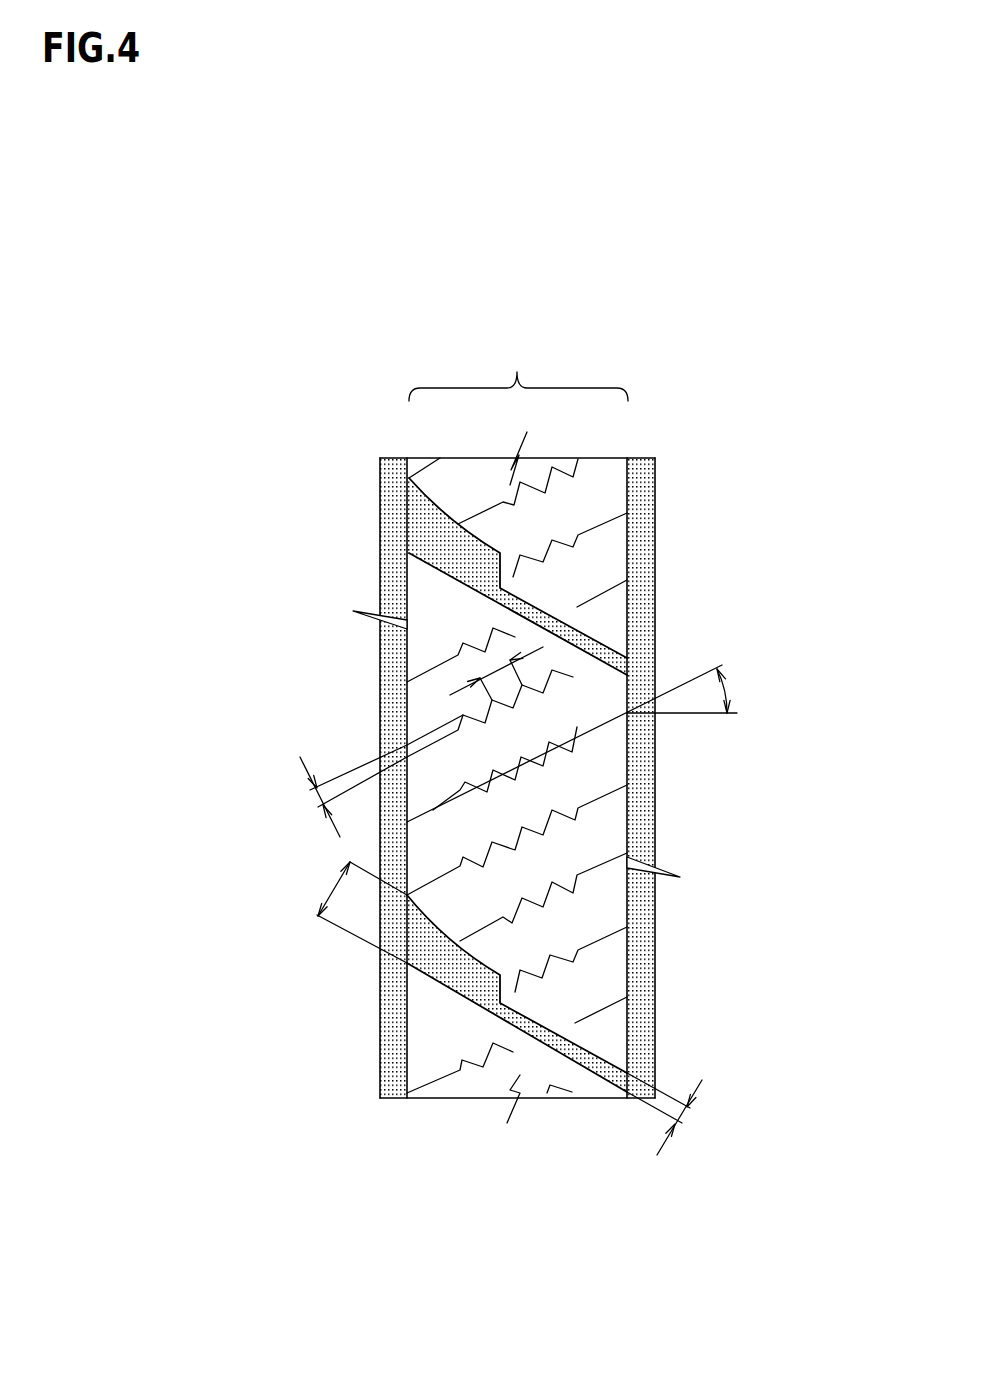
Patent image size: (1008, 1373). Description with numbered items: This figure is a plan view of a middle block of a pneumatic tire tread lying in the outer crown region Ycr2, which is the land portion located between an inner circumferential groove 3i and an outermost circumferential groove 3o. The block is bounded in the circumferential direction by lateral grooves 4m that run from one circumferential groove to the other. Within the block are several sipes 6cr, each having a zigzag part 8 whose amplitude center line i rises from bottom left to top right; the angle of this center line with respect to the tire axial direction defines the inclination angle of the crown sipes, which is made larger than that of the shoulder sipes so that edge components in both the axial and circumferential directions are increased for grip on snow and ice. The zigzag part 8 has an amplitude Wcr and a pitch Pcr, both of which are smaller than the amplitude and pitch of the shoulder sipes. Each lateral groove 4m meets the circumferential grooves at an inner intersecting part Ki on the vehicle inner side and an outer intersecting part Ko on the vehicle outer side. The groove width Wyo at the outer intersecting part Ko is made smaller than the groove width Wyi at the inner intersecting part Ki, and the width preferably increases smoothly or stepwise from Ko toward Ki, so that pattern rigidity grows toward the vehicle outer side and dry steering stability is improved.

The inner circumferential groove 3i is at (390, 1057).
The outermost circumferential groove 3o is at (641, 973).
The lateral groove 4m is at (457, 973).
The sipe disposed in the crown region 6cr is at (552, 752).
The zigzag part 8 is at (548, 668).
The amplitude center line i is at (542, 755).
The pitch of the zigzag part Pcr is at (480, 678).
The amplitude of the zigzag part Wcr is at (299, 797).
The groove width at inner intersecting part Wyi is at (343, 911).
The groove width at outer intersecting part Wyo is at (687, 1114).
The inner intersecting part Ki is at (405, 972).
The outer intersecting part Ko is at (632, 1072).
The outer crown region Ycr2 is at (518, 369).